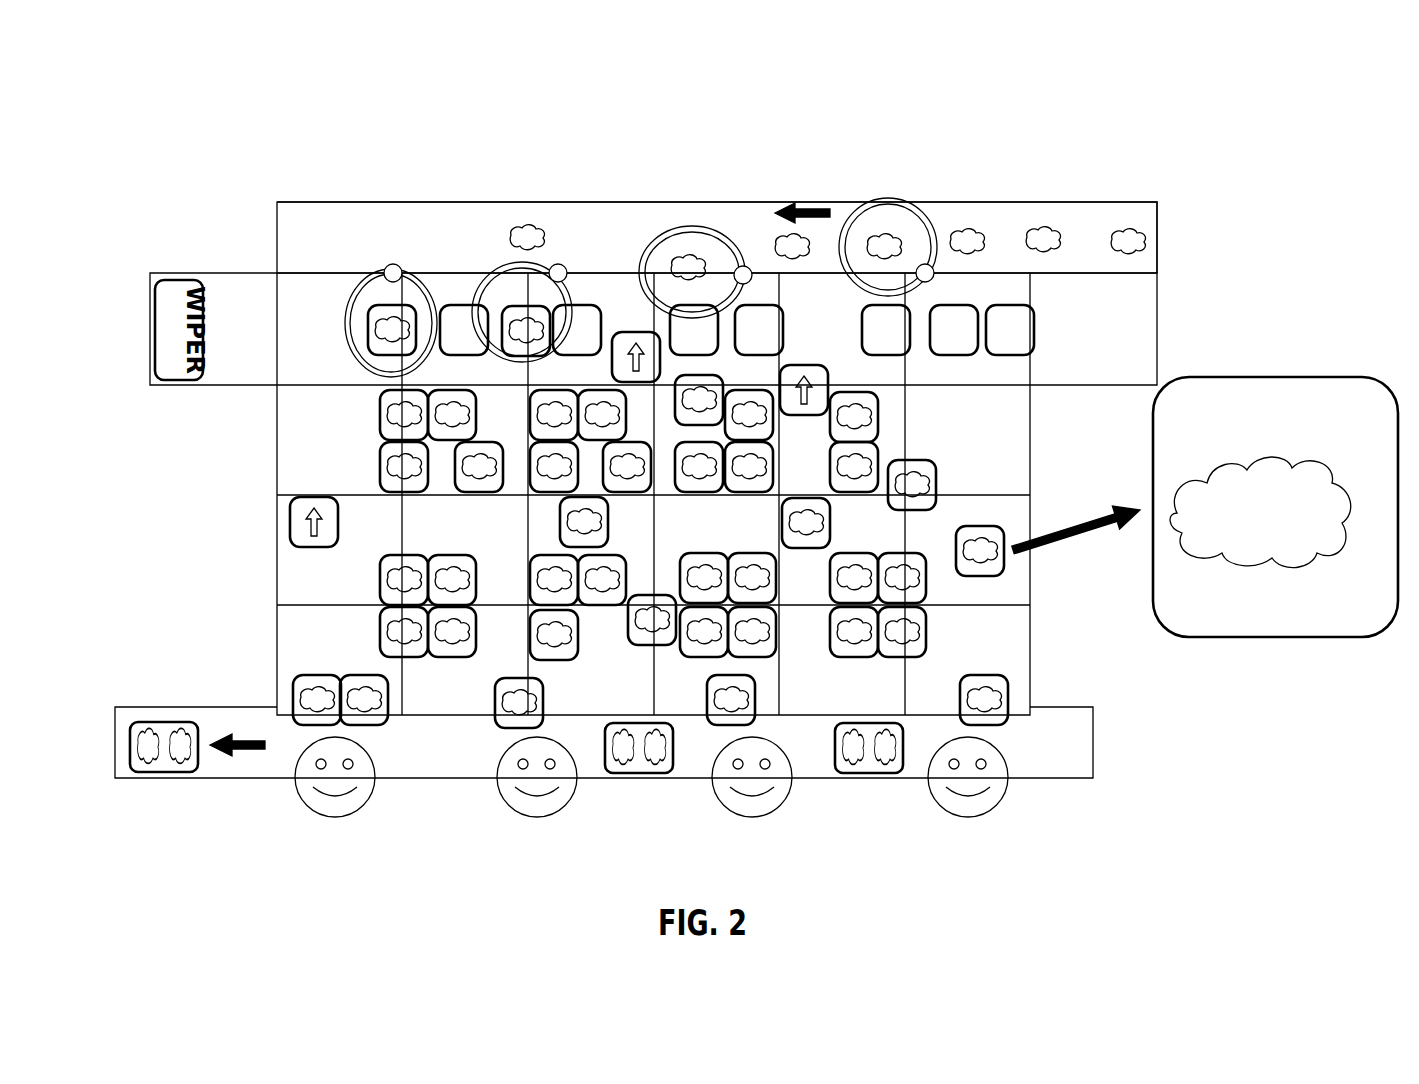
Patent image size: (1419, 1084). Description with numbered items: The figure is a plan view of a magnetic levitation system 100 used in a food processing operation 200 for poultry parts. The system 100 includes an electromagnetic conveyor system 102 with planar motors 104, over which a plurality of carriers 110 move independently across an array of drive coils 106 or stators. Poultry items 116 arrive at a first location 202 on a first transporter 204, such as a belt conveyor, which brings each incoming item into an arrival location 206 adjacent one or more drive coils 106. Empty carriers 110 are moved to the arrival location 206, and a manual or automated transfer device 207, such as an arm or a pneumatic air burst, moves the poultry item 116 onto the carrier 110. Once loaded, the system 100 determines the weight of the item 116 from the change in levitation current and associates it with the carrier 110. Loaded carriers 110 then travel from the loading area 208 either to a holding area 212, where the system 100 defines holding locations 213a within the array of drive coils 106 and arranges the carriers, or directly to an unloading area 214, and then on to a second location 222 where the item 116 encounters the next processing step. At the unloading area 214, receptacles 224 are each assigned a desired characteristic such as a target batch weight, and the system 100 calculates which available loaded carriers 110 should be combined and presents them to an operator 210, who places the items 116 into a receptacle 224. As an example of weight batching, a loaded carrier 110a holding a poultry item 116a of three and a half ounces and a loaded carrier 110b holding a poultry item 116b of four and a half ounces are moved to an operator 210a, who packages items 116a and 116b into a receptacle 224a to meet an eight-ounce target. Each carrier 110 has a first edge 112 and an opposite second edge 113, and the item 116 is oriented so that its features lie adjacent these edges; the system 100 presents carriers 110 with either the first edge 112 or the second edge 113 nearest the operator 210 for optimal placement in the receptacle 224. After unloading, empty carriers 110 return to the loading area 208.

The magnetic levitation system 100 is at (1140, 165).
The electromagnetic conveyor system 102 is at (1172, 303).
The planar motors 104 is at (1140, 350).
The drive coils 106 is at (590, 298).
The carrier 110 is at (1027, 338).
The loaded carrier 110a is at (313, 675).
The loaded carrier 110b is at (387, 673).
The first edge 112 is at (1273, 377).
The second edge 113 is at (1003, 723).
The poultry item 116 is at (1148, 240).
The poultry item 116a is at (317, 700).
The poultry item 116b is at (365, 705).
The food processing operation 200 is at (316, 150).
The first location 202 is at (707, 145).
The first transporter 204 is at (1003, 218).
The arrival location 206 is at (510, 150).
The transfer device 207 is at (865, 205).
The loading area 208 is at (413, 145).
The operator 210 is at (972, 818).
The operator 210a is at (330, 817).
The holding area 212 is at (208, 458).
The holding location 213a is at (365, 588).
The unloading area 214 is at (1050, 868).
The second location 222 is at (837, 840).
The receptacle 224 is at (873, 775).
The receptacle 224a is at (165, 773).